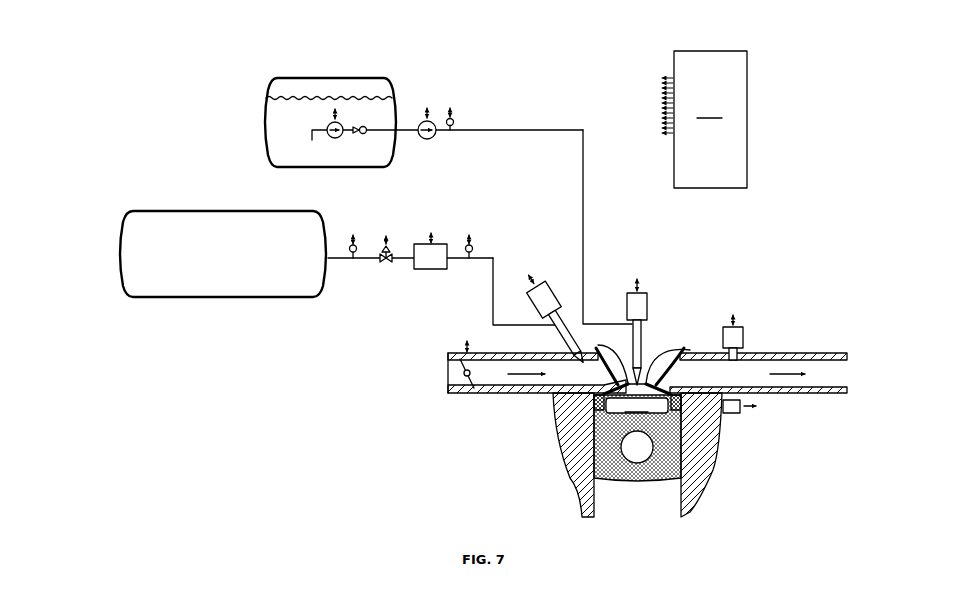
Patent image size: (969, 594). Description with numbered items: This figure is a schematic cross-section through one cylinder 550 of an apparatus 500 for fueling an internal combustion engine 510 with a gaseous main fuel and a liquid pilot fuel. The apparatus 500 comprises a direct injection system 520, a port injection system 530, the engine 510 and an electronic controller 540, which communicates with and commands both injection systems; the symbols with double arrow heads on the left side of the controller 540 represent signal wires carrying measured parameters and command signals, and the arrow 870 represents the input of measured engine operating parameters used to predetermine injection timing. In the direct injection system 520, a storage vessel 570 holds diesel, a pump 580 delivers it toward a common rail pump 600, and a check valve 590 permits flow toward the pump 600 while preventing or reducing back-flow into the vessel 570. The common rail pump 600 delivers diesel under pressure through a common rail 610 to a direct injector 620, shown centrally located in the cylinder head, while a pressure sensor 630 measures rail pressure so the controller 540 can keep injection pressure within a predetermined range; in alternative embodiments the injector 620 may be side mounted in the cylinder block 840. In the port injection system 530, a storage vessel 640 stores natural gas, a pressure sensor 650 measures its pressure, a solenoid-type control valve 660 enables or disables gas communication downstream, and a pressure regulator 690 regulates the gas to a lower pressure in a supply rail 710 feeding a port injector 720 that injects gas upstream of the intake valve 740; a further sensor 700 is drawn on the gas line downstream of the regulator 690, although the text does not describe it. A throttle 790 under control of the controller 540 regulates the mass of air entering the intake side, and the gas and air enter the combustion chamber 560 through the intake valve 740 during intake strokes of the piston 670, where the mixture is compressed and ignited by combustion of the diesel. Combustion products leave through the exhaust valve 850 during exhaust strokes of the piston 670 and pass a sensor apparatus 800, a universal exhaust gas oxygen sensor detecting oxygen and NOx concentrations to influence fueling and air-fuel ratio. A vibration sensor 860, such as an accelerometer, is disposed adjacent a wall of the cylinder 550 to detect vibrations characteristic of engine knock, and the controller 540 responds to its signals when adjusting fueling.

The apparatus 500 is at (153, 70).
The internal combustion engine 510 is at (767, 262).
The direct injection system 520 is at (276, 49).
The port injection system 530 is at (184, 171).
The electronic controller 540 is at (704, 119).
The cylinder 550 is at (613, 486).
The combustion chamber 560 is at (637, 405).
The storage vessel 570 is at (283, 136).
The pump 580 is at (334, 139).
The check valve 590 is at (362, 134).
The common rail pump 600 is at (426, 140).
The common rail 610 is at (582, 200).
The direct injector 620 is at (626, 300).
The pressure sensor 630 is at (452, 118).
The storage vessel 640 is at (185, 236).
The pressure sensor 650 is at (351, 243).
The control valve 660 is at (386, 264).
The piston 670 is at (590, 438).
The pressure regulator 690 is at (433, 270).
The pressure sensor 700 is at (471, 245).
The supply rail 710 is at (493, 323).
The port injector 720 is at (534, 291).
The intake valve 740 is at (606, 386).
The throttle 790 is at (450, 370).
The sensor apparatus 800 is at (745, 335).
The cylinder block 840 is at (576, 421).
The exhaust valve 850 is at (672, 381).
The vibration sensor 860 is at (745, 402).
The arrow 870 is at (750, 121).